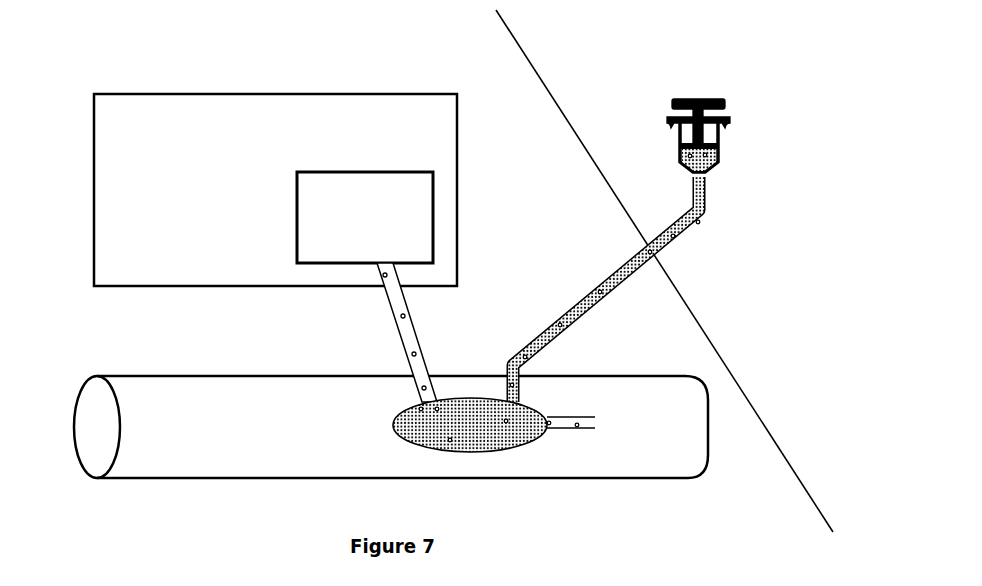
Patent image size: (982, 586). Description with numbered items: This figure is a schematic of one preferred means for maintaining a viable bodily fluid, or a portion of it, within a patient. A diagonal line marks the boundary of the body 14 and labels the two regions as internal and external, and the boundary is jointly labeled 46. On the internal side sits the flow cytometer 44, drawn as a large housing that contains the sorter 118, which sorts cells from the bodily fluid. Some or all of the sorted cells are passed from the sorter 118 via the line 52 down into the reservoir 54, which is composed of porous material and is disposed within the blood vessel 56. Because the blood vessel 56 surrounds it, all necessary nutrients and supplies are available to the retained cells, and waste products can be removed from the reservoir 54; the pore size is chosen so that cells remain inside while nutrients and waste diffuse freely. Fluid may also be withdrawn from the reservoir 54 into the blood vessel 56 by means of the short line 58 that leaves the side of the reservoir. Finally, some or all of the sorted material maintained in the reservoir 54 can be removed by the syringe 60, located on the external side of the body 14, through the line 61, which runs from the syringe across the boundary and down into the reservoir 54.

The body 14 is at (640, 271).
The skin / internal-external interface 46 is at (550, 90).
The flow cytometer 44 is at (92, 218).
The sorter 118 is at (296, 228).
The line 52 is at (407, 350).
The reservoir 54 is at (393, 440).
The blood vessel 56 is at (255, 482).
The line 58 is at (563, 433).
The syringe 60 is at (722, 135).
The line 61 is at (600, 283).